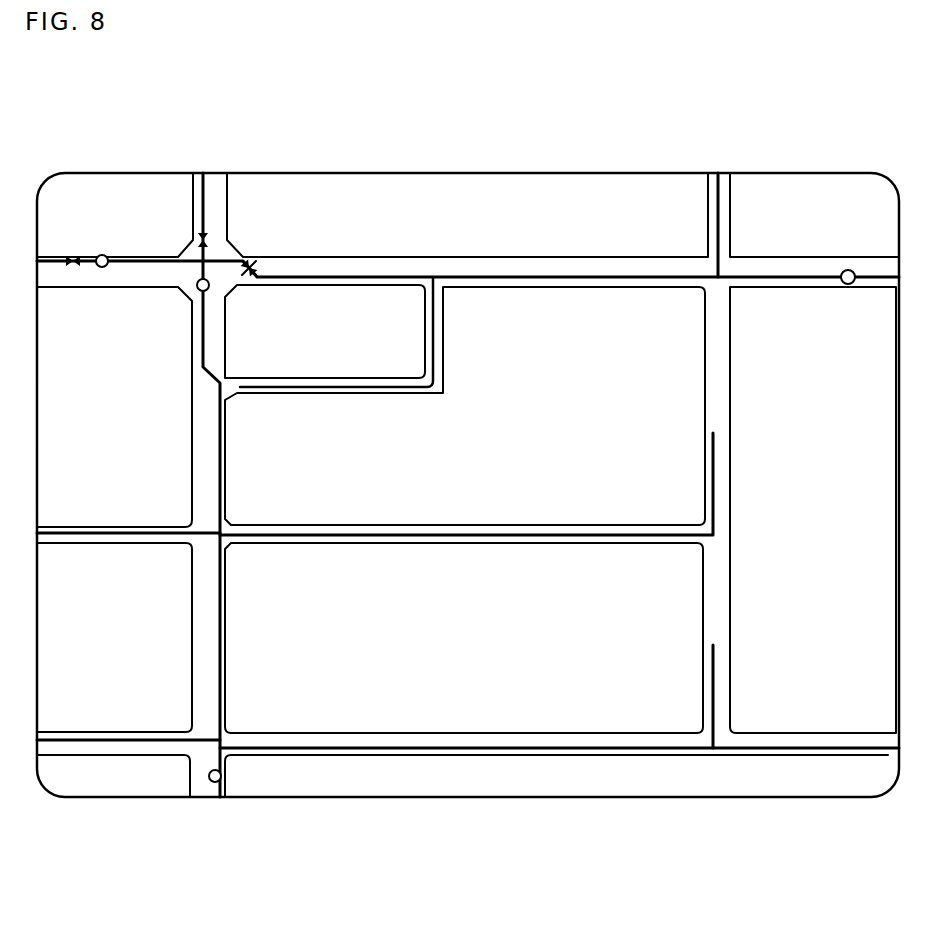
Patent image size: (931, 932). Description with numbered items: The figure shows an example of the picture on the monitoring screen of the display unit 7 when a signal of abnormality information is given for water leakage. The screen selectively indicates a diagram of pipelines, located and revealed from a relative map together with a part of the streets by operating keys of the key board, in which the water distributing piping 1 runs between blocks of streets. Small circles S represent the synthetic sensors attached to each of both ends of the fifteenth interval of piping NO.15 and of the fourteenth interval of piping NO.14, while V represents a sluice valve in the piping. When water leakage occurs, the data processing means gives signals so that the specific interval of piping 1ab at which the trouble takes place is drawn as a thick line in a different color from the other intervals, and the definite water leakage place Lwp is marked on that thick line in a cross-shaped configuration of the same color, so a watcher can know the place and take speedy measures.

The water distributing piping 1 is at (55, 258).
The specific interval of piping 1ab is at (465, 406).
The display unit 7 is at (327, 793).
The synthetic sensor S is at (104, 255).
The sluice valve V is at (208, 238).
The water leakage place Lwp is at (257, 268).
The No.15 interval of piping NO.15 is at (527, 347).
The No.14 interval of piping NO.14 is at (464, 638).